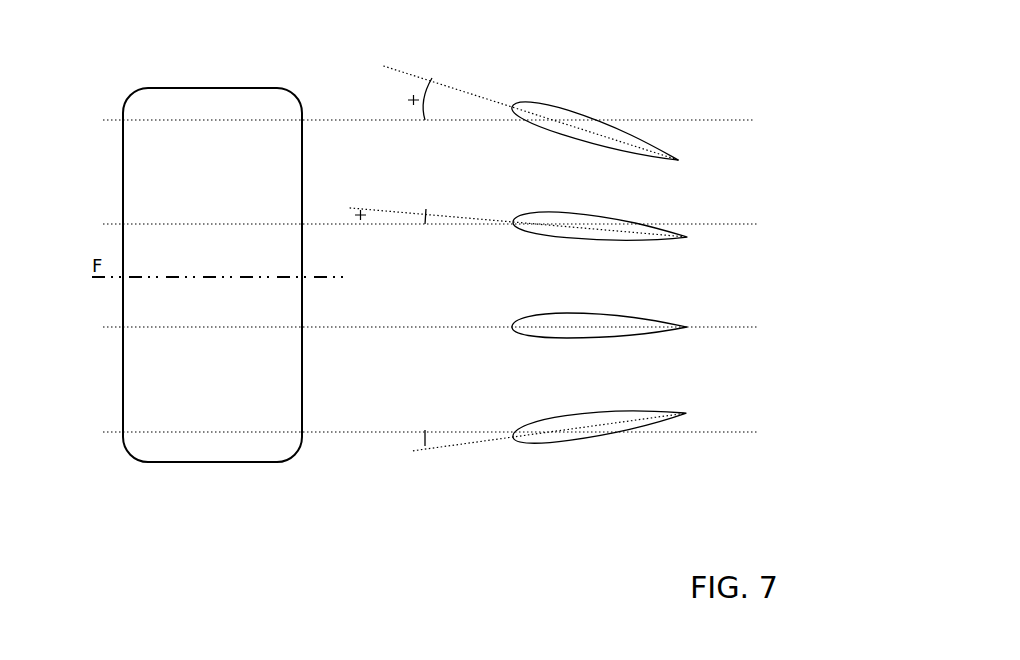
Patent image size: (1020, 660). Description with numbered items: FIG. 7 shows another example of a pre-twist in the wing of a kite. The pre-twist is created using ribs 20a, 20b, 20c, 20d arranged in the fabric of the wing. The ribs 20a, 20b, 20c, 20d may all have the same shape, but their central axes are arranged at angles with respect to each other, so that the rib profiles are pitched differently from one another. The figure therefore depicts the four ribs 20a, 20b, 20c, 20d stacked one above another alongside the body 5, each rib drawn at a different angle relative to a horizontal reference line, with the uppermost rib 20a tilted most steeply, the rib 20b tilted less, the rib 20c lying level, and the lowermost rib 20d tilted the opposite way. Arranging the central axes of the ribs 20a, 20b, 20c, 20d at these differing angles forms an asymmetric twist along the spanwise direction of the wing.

The body / fuselage section 5 is at (227, 462).
The rib 20a is at (657, 148).
The rib 20b is at (660, 236).
The rib 20c is at (657, 318).
The rib 20d is at (663, 422).